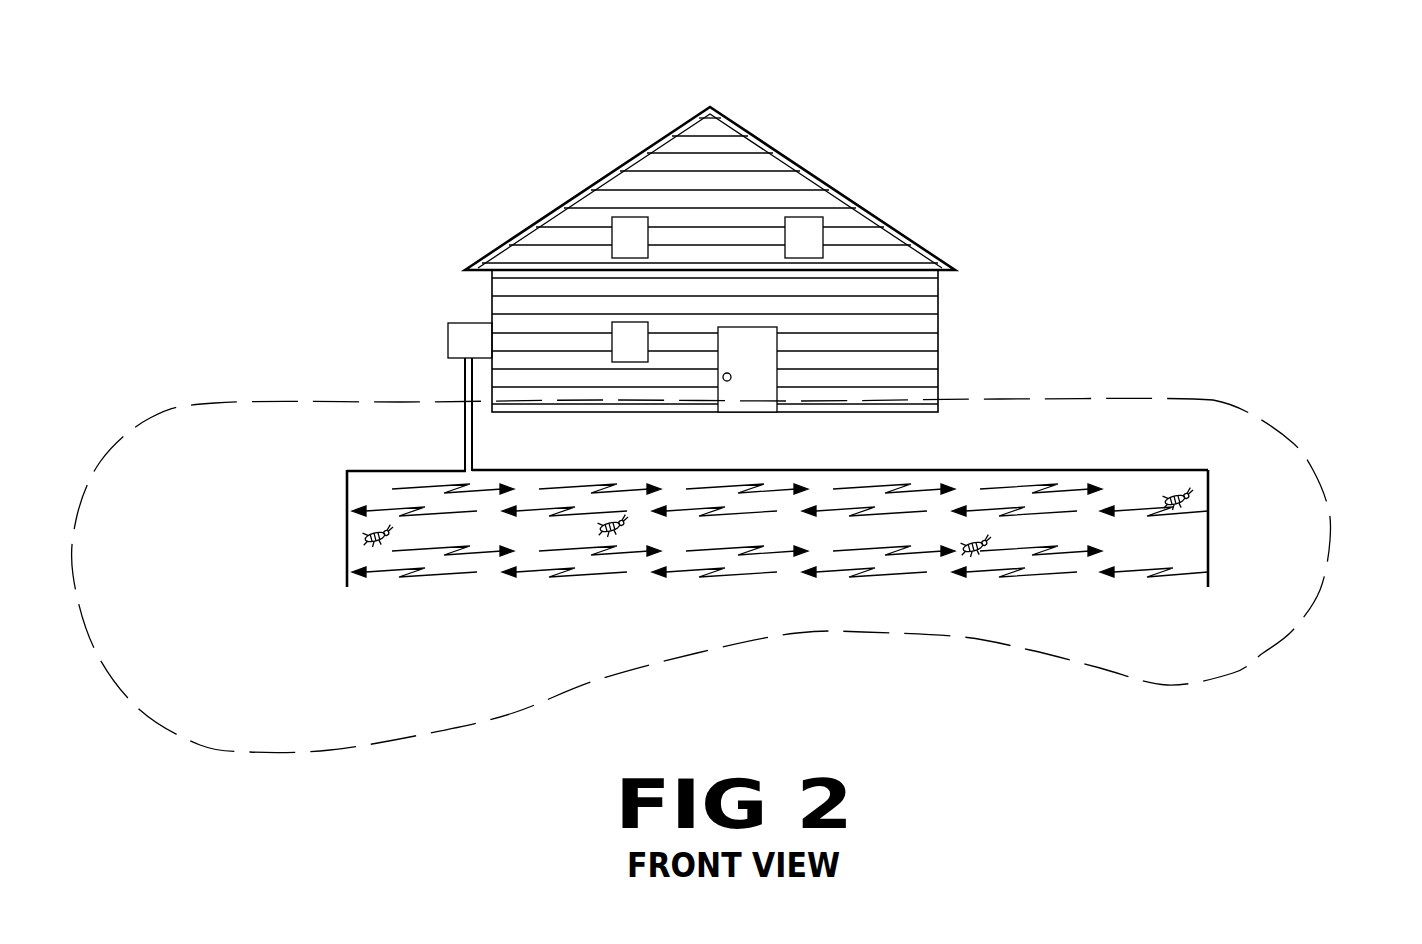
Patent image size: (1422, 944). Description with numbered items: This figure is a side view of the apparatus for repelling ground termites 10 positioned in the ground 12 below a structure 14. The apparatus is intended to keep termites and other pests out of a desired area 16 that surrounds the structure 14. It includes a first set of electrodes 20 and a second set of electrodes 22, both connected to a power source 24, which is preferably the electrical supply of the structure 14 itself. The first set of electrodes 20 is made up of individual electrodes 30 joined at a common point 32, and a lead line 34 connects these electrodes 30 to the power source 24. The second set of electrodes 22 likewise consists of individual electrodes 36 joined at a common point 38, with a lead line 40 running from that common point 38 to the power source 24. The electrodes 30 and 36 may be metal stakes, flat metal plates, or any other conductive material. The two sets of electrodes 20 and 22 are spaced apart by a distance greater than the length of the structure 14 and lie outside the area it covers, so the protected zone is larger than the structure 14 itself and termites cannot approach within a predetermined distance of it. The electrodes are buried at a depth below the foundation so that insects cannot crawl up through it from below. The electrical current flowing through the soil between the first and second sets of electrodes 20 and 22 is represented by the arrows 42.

The apparatus for repelling ground termites 10 is at (255, 188).
The ground 12 is at (1169, 423).
The structure 14 is at (810, 200).
The desired area 16 is at (969, 518).
The first set of electrodes 20 is at (283, 508).
The second set of electrodes 22 is at (1290, 473).
The power source 24 is at (465, 342).
The electrode 30 is at (347, 583).
The common point 32 is at (347, 472).
The lead line 34 is at (388, 471).
The electrode 36 is at (1210, 557).
The common point 38 is at (1208, 470).
The lead line 40 is at (647, 470).
The arrows 42 is at (592, 576).